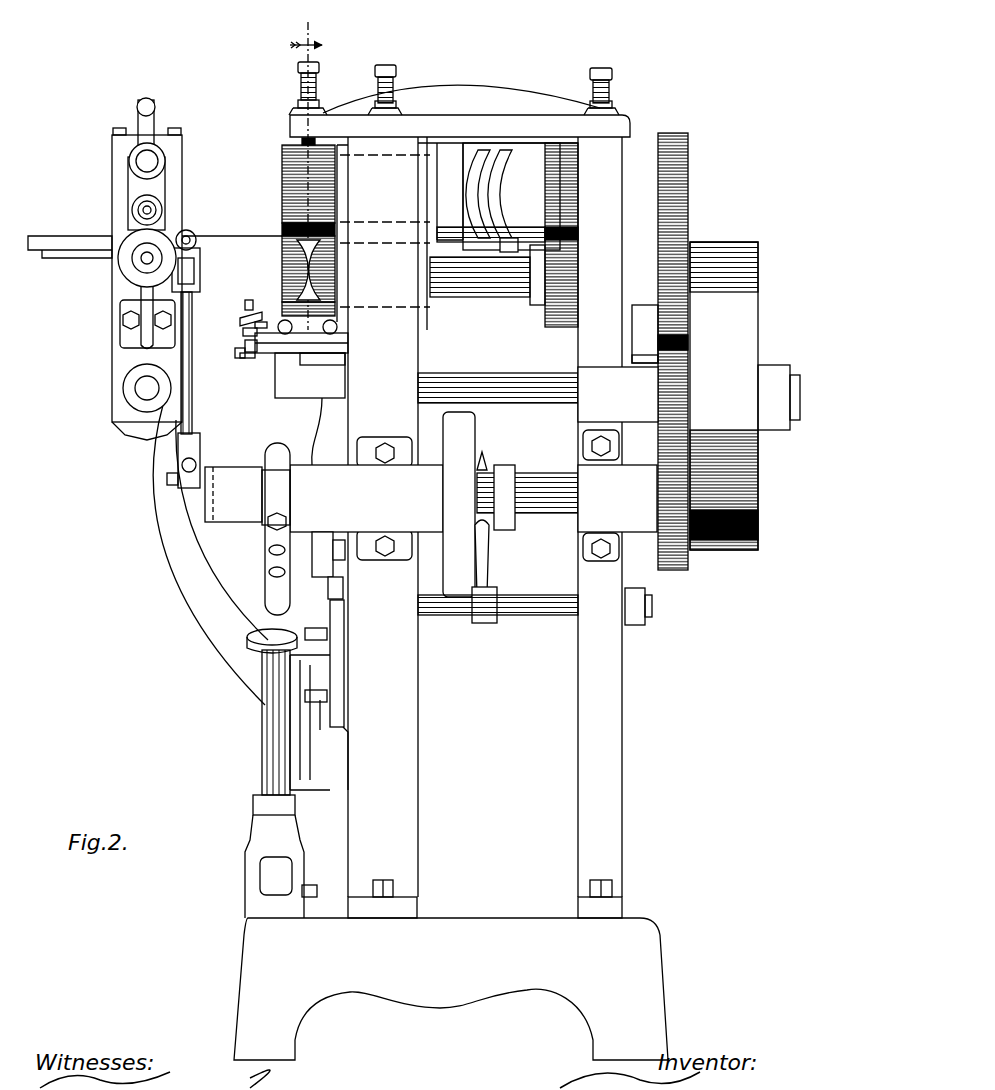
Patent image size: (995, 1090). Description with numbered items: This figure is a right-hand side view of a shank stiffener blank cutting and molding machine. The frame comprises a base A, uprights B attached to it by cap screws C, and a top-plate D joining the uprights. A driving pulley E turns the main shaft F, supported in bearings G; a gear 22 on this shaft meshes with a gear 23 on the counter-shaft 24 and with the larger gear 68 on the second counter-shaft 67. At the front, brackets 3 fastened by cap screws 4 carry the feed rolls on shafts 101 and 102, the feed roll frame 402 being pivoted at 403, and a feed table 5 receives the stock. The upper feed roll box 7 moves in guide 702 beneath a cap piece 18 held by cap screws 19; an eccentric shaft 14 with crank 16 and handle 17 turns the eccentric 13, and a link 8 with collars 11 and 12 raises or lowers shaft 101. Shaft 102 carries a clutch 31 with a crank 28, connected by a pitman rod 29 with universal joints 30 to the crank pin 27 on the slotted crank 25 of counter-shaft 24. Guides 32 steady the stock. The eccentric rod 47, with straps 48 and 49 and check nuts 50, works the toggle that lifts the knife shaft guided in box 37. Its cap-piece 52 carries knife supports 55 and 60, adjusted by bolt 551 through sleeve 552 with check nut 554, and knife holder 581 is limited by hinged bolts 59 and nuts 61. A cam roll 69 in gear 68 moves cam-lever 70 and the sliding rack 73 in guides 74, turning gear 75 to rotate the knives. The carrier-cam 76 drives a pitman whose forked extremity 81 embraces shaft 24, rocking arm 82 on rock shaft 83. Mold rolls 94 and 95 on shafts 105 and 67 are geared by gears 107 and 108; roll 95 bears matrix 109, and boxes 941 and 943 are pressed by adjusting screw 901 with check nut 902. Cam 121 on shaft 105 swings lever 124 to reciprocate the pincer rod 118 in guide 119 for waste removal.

The brackets or arms 3 is at (147, 577).
The cap screws 4 is at (316, 634).
The feed table 5 is at (60, 238).
The box 7 is at (138, 226).
The link 8 is at (155, 189).
The collar 11 is at (128, 167).
The lower collar 12 is at (148, 223).
The eccentric 13 is at (232, 390).
The eccentric shaft 14 is at (133, 154).
The crank 16 is at (152, 134).
The handle 17 is at (147, 97).
The cap piece 18 is at (161, 139).
The cap screws 19 is at (120, 126).
The gear 22 is at (666, 382).
The gear 23 is at (692, 478).
The counter-shaft 24 is at (551, 486).
The adjustable slotted crank 25 is at (205, 505).
The crank pin 27 is at (166, 477).
The crank 28 is at (165, 262).
The pitman rod 29 is at (193, 398).
The universal joint 30 is at (195, 262).
The clutch 31 is at (120, 260).
The adjustable guides 32 is at (280, 236).
The box 37 is at (290, 430).
The eccentric rod 47 is at (273, 756).
The eccentric strap 48 is at (272, 461).
The eccentric strap 49 is at (273, 585).
The check nuts 50 is at (256, 647).
The cap-piece 52 is at (297, 380).
The knife support 55 is at (262, 333).
The hinged bolts 59 is at (250, 298).
The knife support 60 is at (333, 343).
The nuts 61 is at (247, 316).
The second counter-shaft 67 is at (500, 275).
The gear 68 is at (686, 133).
The cam roll 69 is at (652, 348).
The cam-lever 70 is at (668, 337).
The sliding rack 73 is at (390, 598).
The guides 74 is at (338, 595).
The gear 75 is at (343, 557).
The carrier-cam 76 is at (472, 442).
The forked extremity 81 is at (490, 525).
The arm 82 is at (487, 572).
The rock shaft 83 is at (572, 612).
The upper mold roll 94 is at (300, 172).
The lower mold roll 95 is at (282, 215).
The shaft 101 is at (140, 210).
The shaft 102 is at (145, 262).
The shaft 105 is at (444, 172).
The gear 107 is at (558, 262).
The gear 108 is at (560, 186).
The matrix 109 is at (310, 284).
The sliding pincer rod 118 is at (505, 250).
The guide 119 is at (458, 234).
The cam 121 is at (482, 182).
The arm or lever 124 is at (492, 235).
The feed roll frame 402 is at (110, 368).
The pivot 403 is at (145, 392).
The adjusting bolt 551 is at (273, 340).
The sleeve 552 is at (244, 352).
The check nut 554 is at (247, 357).
The knife holder 581 is at (258, 320).
The guide 702 is at (118, 186).
The adjusting screw 901 is at (320, 66).
The check nut 902 is at (296, 100).
The box 941 is at (341, 166).
The box 943 is at (337, 287).
The base A is at (240, 980).
The uprights B is at (421, 793).
The cap screws C is at (388, 886).
The top-plate D is at (468, 123).
The driving pulley E is at (720, 552).
The main or driving shaft F is at (460, 386).
The bearings G is at (421, 366).